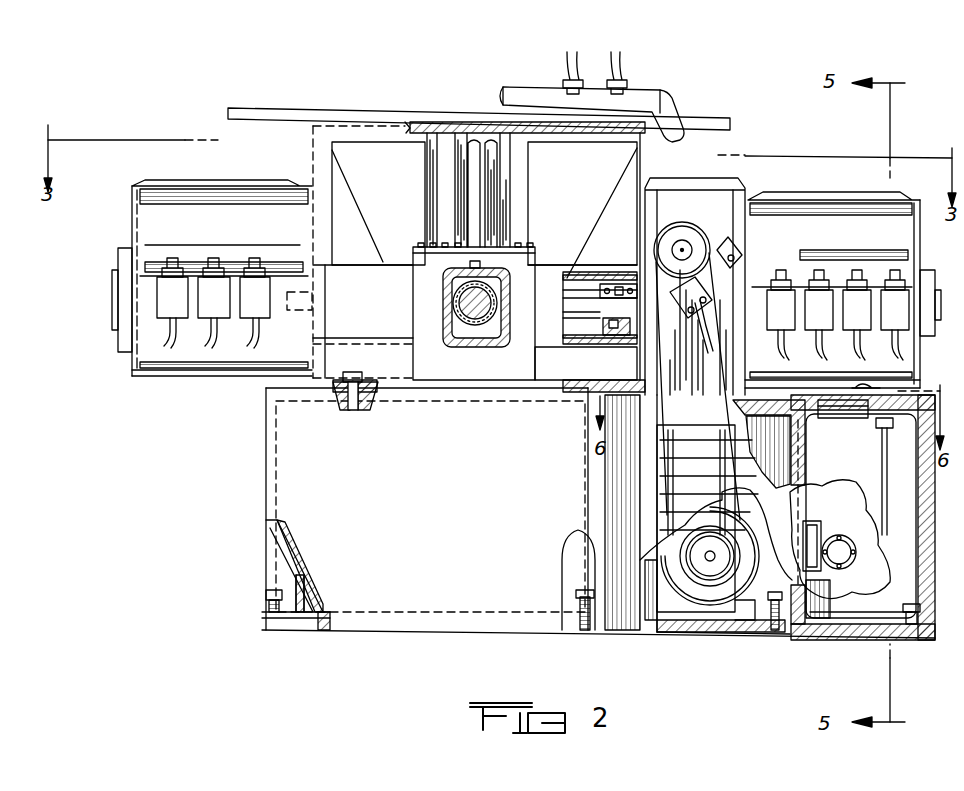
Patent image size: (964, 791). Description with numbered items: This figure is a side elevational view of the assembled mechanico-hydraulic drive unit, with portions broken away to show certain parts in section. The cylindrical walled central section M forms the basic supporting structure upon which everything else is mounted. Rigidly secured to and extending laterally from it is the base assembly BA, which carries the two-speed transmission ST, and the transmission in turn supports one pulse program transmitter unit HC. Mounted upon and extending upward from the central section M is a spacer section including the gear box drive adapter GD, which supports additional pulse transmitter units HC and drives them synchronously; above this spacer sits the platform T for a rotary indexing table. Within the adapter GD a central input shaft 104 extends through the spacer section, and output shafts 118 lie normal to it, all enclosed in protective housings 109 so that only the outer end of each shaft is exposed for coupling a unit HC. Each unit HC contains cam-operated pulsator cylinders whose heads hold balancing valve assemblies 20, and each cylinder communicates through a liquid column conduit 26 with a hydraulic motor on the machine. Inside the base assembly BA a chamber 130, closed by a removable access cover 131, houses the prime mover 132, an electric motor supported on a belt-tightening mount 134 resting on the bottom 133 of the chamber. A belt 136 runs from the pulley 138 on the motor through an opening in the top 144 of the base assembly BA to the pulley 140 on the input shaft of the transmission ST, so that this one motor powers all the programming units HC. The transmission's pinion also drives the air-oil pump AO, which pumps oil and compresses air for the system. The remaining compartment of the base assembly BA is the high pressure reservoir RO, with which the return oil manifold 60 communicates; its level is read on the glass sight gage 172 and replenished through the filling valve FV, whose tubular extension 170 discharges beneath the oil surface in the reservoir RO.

The platform T is at (294, 108).
The gear box drive adapter GD is at (300, 161).
The pulse program transmitter unit HC is at (132, 208).
The balancing valve assembly 20 is at (202, 290).
The liquid column conduit 26 is at (622, 62).
The return oil manifold 60 is at (656, 94).
The protective housing 109 is at (512, 283).
The output shaft 118 is at (448, 316).
The central input shaft 104 is at (583, 305).
The two-speed transmission ST is at (738, 200).
The pulley 140 is at (683, 226).
The air-oil pump AO is at (735, 256).
The belt 136 is at (668, 384).
The central section M is at (288, 471).
The removable access cover 131 is at (660, 465).
The chamber 130 is at (790, 445).
The high pressure reservoir RO is at (913, 505).
The top of the base assembly 144 is at (784, 400).
The filling valve FV is at (860, 386).
The tubular extension 170 is at (878, 464).
The glass sight gage 172 is at (822, 528).
The pulley 138 is at (716, 566).
The prime mover 132 is at (712, 566).
The bottom of the chamber 133 is at (742, 640).
The belt-tightening mount 134 is at (786, 640).
The base assembly BA is at (712, 648).